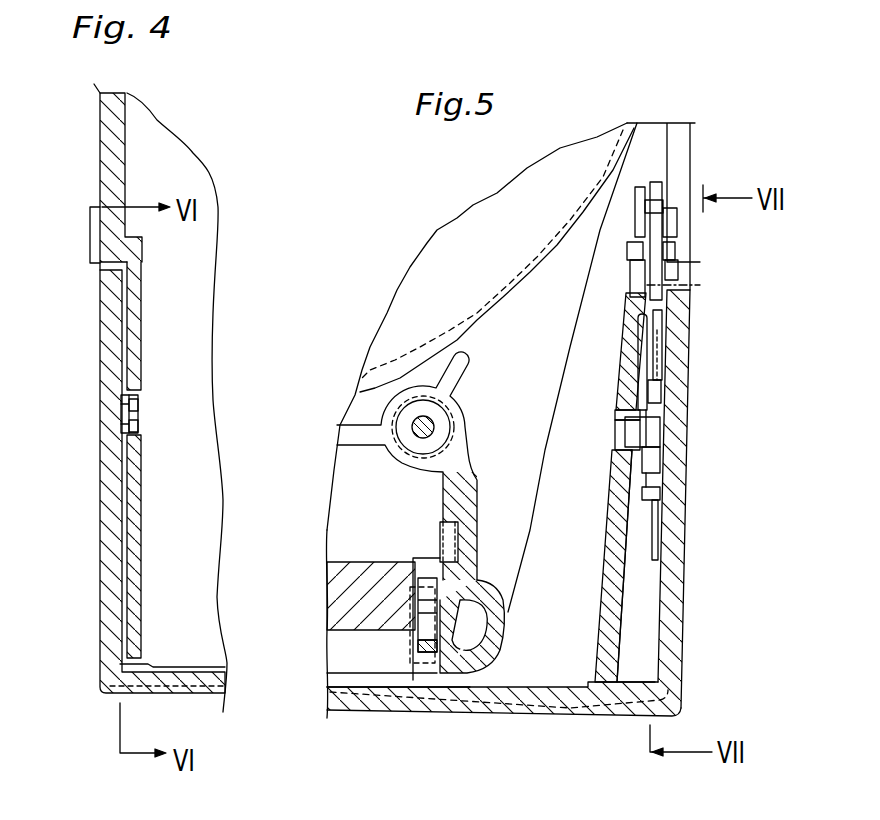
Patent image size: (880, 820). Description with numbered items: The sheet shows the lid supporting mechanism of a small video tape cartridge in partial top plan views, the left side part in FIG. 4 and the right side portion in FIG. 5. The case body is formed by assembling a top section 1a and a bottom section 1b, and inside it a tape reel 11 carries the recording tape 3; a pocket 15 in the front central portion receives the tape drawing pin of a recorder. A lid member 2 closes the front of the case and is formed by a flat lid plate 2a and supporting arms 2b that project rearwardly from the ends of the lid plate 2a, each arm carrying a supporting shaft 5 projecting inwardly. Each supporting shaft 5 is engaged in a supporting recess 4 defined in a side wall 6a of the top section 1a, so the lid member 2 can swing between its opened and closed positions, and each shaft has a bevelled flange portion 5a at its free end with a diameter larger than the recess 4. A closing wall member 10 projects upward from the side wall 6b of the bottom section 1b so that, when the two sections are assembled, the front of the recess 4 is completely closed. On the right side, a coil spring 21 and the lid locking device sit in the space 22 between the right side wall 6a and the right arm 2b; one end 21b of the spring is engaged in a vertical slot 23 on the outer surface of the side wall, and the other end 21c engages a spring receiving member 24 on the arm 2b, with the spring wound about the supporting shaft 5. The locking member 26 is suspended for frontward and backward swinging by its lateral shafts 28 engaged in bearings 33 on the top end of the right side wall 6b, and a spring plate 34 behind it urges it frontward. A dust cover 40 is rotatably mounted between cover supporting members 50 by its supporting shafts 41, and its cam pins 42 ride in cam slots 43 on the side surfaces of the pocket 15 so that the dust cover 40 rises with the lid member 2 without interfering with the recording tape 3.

In FIG. 4, the top section 1a is at (110, 145).
In FIG. 5, the top section 1a is at (684, 150).
In FIG. 4, the bottom section 1b is at (127, 588).
In FIG. 5, the bottom section 1b is at (623, 628).
In FIG. 5, the lid member 2 is at (679, 673).
In FIG. 5, the lid plate 2a is at (570, 712).
In FIG. 4, the supporting arms 2b is at (110, 500).
In FIG. 5, the supporting arms 2b is at (679, 523).
In FIG. 5, the recording tape 3 is at (534, 503).
In FIG. 4, the supporting recesses 4 is at (120, 415).
In FIG. 5, the supporting recesses 4 is at (617, 411).
In FIG. 4, the supporting shafts 5 is at (138, 422).
In FIG. 5, the supporting shafts 5 is at (634, 436).
In FIG. 4, the bevelled flange portion 5a is at (142, 408).
In FIG. 5, the bevelled flange portion 5a is at (618, 433).
In FIG. 4, the side walls of the top section 6a is at (137, 323).
In FIG. 5, the side walls of the top section 6a is at (630, 350).
In FIG. 4, the side walls of the bottom section 6b is at (130, 548).
In FIG. 5, the side walls of the bottom section 6b is at (606, 577).
In FIG. 4, the closing wall members 10 is at (123, 440).
In FIG. 5, the closing wall members 10 is at (628, 460).
In FIG. 5, the tape reels 11 is at (452, 235).
In FIG. 5, the pocket 15 is at (358, 528).
In FIG. 5, the coil spring 21 is at (661, 392).
In FIG. 5, the one end of the coil spring 21b is at (639, 328).
In FIG. 5, the another end of the coil spring 21c is at (656, 540).
In FIG. 5, the space 22 is at (661, 488).
In FIG. 5, the vertical slot 23 is at (664, 331).
In FIG. 5, the spring receiving member 24 is at (642, 522).
In FIG. 5, the locking member 26 is at (664, 230).
In FIG. 5, the lateral shafts 28 is at (676, 252).
In FIG. 5, the bearings 33 is at (638, 238).
In FIG. 5, the spring plate 34 is at (657, 182).
In FIG. 5, the dust cover 40 is at (337, 607).
In FIG. 5, the supporting shafts of the dust cover 41 is at (432, 627).
In FIG. 5, the cam pins 42 is at (441, 532).
In FIG. 5, the cam slots 43 is at (441, 528).
In FIG. 5, the cover supporting members 50 is at (416, 647).